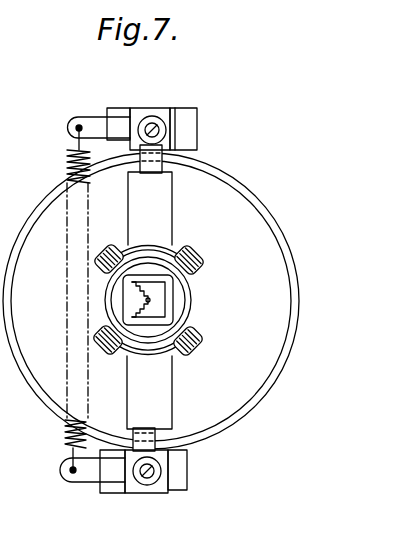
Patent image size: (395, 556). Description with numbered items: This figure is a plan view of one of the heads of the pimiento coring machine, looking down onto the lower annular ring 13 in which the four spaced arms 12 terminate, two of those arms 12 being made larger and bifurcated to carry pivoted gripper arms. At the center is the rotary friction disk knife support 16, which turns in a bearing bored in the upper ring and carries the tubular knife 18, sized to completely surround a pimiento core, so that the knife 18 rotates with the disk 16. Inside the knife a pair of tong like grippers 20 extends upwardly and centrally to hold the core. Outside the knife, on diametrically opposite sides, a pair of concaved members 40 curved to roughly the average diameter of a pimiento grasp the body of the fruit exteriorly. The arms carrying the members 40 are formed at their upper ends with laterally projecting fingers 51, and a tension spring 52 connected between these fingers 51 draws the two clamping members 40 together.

The spaced arms 12 is at (155, 109).
The lower annular ring 13 is at (256, 191).
The rotary friction disk knife support 16 is at (285, 322).
The tubular knife 18 is at (191, 299).
The tong like grippers 20 is at (146, 300).
The concaved members 40 is at (171, 243).
The laterally projecting fingers 51 is at (88, 123).
The tension spring 52 is at (66, 163).